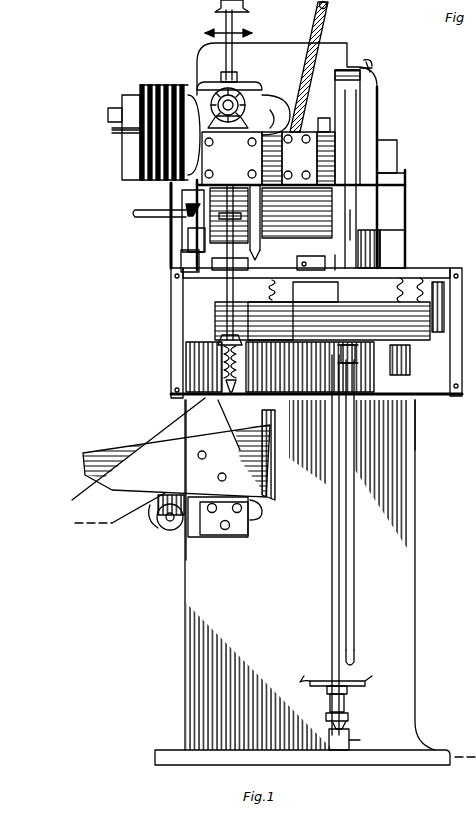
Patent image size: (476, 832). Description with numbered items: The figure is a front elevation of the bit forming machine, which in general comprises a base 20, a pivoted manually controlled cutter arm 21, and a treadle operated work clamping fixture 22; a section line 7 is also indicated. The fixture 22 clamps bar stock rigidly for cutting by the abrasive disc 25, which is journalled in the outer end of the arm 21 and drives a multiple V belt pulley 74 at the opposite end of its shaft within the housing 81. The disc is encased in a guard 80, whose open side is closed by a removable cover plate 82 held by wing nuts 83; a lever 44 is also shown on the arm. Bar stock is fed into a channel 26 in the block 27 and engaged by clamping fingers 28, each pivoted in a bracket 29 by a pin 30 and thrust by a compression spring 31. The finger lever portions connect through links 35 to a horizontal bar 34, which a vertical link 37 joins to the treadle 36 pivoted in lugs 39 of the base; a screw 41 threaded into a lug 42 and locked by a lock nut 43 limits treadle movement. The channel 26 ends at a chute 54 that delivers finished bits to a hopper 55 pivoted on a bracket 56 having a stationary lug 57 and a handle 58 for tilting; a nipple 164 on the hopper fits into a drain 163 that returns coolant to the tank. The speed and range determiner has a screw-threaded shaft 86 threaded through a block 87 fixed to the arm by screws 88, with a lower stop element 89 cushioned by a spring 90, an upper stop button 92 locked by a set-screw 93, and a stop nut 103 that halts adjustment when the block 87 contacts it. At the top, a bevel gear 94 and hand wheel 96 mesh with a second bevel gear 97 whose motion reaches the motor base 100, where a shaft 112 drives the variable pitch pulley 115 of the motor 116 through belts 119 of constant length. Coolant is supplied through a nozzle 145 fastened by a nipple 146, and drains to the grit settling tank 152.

The section line 7 is at (219, 124).
The base 20 is at (424, 485).
The cutter arm 21 is at (274, 128).
The work clamping fixture 22 is at (312, 268).
The abrasive disc 25 is at (352, 225).
The channel 26 is at (305, 262).
The block 27 is at (250, 330).
The clamping fingers 28 is at (266, 270).
The bracket 29 is at (322, 268).
The pin 30 is at (415, 268).
The compression spring 31 is at (270, 290).
The horizontal bar 34 is at (432, 388).
The links 35 is at (181, 333).
The treadle 36 is at (350, 682).
The vertical link 37 is at (332, 516).
The lugs 39 is at (345, 702).
The screw 41 is at (349, 717).
The lug 42 is at (360, 740).
The lock nut 43 is at (344, 727).
The hand lever 44 is at (330, 18).
The chute 54 is at (283, 455).
The hopper 55 is at (268, 478).
The bracket 56 is at (250, 532).
The stationary lug 57 is at (187, 555).
The handle 58 is at (225, 476).
The multiple V belt pulley 74 is at (130, 156).
The guard 80 is at (360, 100).
The housing 81 is at (320, 125).
The removable cover plate 82 is at (370, 118).
The wing nuts 83 is at (372, 70).
The screw-threaded shaft 86 is at (220, 6).
The block 87 is at (270, 160).
The screws 88 is at (250, 144).
The stop element 89 is at (222, 350).
The spring 90 is at (222, 365).
The upper stop button 92 is at (180, 289).
The set-screw 93 is at (184, 265).
The bevel gear 94 is at (276, 107).
The hand wheel 96 is at (206, 86).
The second bevel gear 97 is at (238, 100).
The motor base 100 is at (397, 150).
The stop nut 103 is at (187, 226).
The shaft 112 is at (134, 213).
The variable pitch pulley 115 is at (120, 117).
The motor 116 is at (280, 52).
The belts 119 is at (116, 130).
The nozzle 145 is at (322, 321).
The nipple 146 is at (360, 355).
The grit settling tank 152 is at (412, 374).
The drain 163 is at (262, 512).
The nipple 164 is at (263, 502).